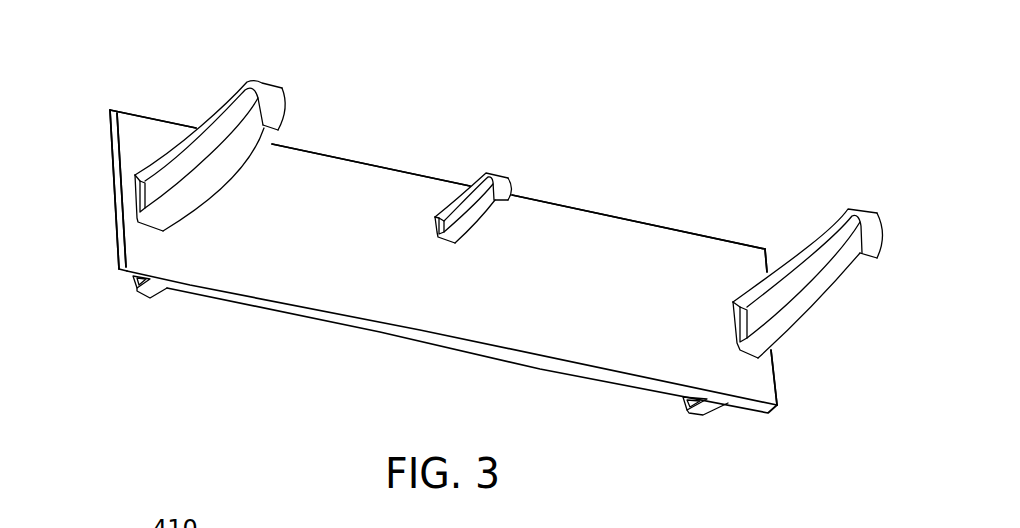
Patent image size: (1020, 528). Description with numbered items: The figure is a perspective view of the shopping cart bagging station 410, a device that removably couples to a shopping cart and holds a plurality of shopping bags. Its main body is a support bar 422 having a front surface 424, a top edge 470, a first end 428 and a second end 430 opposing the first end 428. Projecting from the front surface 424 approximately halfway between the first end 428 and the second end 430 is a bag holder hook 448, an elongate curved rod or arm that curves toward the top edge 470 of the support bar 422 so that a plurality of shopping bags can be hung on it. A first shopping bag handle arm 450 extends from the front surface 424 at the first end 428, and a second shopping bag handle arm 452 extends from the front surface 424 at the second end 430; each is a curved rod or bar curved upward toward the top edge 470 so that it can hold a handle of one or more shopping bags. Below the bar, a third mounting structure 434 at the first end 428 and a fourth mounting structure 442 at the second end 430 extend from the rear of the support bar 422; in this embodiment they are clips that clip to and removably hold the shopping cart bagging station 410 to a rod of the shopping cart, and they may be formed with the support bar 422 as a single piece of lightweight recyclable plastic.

The shopping cart bagging station 410 is at (488, 267).
The support bar 422 is at (638, 233).
The front surface 424 is at (398, 277).
The first end 428 is at (104, 99).
The second end 430 is at (774, 234).
The third mounting structure 434 is at (133, 278).
The fourth mounting structure 442 is at (708, 413).
The bag holder hook 448 is at (505, 188).
The first shopping bag handle arm 450 is at (273, 105).
The second shopping bag handle arm 452 is at (872, 233).
The top edge 470 is at (374, 162).